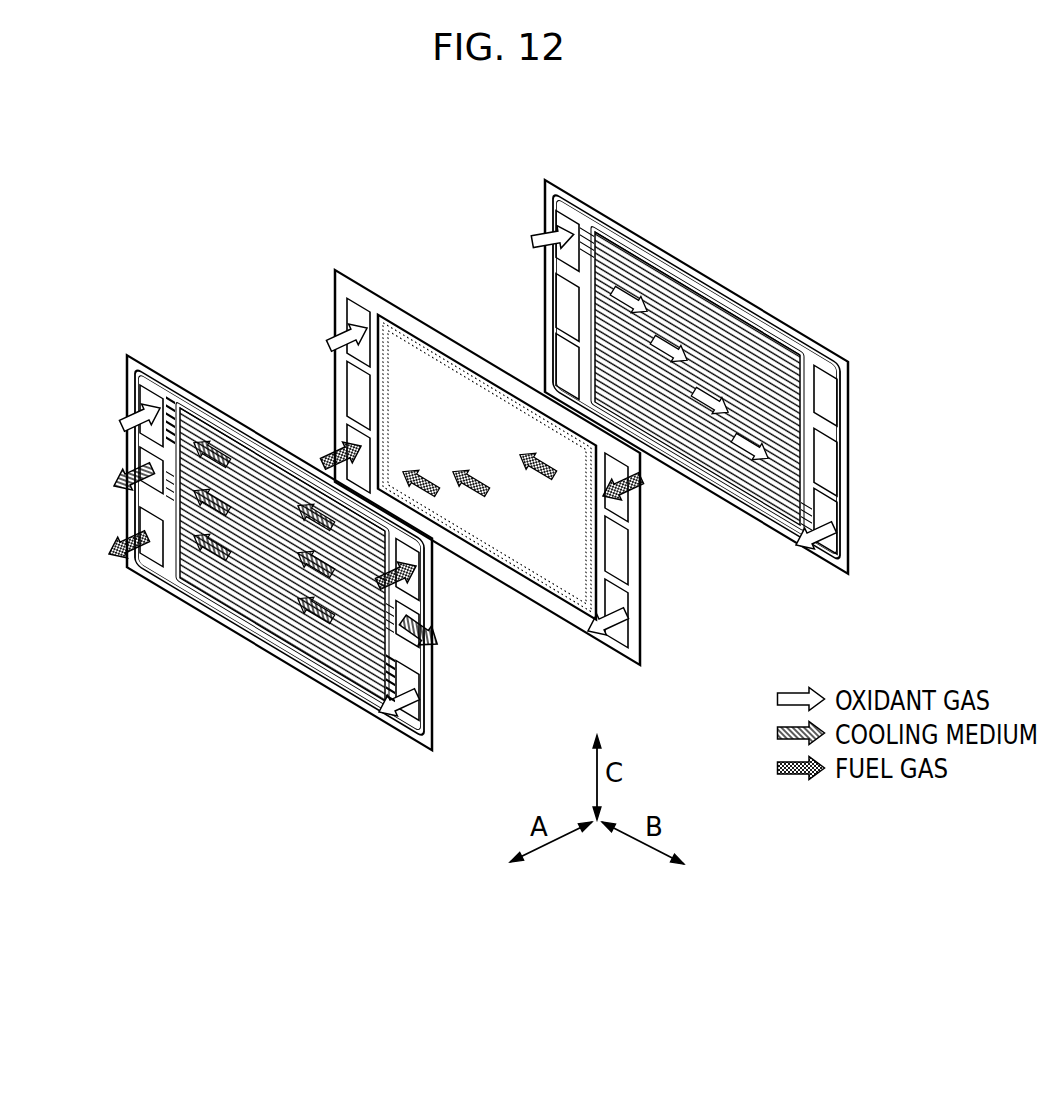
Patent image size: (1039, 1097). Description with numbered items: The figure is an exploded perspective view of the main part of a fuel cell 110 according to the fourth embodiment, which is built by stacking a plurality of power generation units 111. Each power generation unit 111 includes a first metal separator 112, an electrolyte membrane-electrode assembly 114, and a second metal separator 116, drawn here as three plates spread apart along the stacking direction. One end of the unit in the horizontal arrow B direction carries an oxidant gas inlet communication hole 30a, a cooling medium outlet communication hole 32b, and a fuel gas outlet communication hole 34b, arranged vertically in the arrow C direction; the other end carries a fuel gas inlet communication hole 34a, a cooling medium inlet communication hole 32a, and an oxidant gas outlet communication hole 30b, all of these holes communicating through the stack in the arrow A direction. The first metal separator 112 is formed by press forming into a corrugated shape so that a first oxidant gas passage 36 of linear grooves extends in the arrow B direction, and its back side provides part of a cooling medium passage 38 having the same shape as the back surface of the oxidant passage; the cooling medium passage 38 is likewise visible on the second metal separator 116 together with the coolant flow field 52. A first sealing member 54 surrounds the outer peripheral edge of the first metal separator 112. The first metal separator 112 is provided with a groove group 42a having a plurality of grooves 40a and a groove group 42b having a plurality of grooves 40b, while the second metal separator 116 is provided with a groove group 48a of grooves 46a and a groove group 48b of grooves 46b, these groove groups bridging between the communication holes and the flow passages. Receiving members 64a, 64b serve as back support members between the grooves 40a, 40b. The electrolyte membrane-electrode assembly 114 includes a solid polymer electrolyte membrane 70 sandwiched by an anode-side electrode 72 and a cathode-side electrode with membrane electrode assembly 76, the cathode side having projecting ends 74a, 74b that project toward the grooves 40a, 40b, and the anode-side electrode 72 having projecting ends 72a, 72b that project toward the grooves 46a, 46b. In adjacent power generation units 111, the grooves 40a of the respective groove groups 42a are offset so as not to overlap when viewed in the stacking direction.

The fuel cell 110 is at (590, 95).
The power generation unit 111 is at (645, 95).
The first metal separator 112 is at (544, 179).
The electrolyte membrane-electrode assembly 114 is at (334, 269).
The second metal separator 116 is at (126, 354).
The oxidant gas inlet communication hole 30a is at (150, 400).
The oxidant gas outlet communication hole 30b is at (415, 708).
The cooling medium inlet communication hole 32a is at (412, 620).
The cooling medium outlet communication hole 32b is at (150, 458).
The fuel gas inlet communication hole 34a is at (420, 582).
The fuel gas outlet communication hole 34b is at (148, 520).
The first oxidant gas passage 36 is at (641, 266).
The cooling medium passage 38 is at (222, 440).
The groove 40a is at (583, 258).
The groove 40b is at (836, 498).
The groove group 42a is at (579, 228).
The groove group 42b is at (808, 525).
The groove 46a is at (480, 548).
The groove 46b is at (176, 568).
The groove group 48a is at (410, 550).
The groove group 48b is at (146, 564).
The coolant flow field 52 is at (259, 434).
The first sealing member 54 is at (706, 283).
The receiving member 64a is at (167, 397).
The receiving member 64b is at (402, 684).
The solid polymer electrolyte membrane 70 is at (508, 550).
The anode-side electrode 72 is at (521, 578).
The projecting end 74a is at (358, 341).
The projecting end 74b is at (599, 627).
The projecting end 72a is at (632, 512).
The projecting end 72b is at (374, 458).
The membrane electrode assembly 76 is at (531, 585).